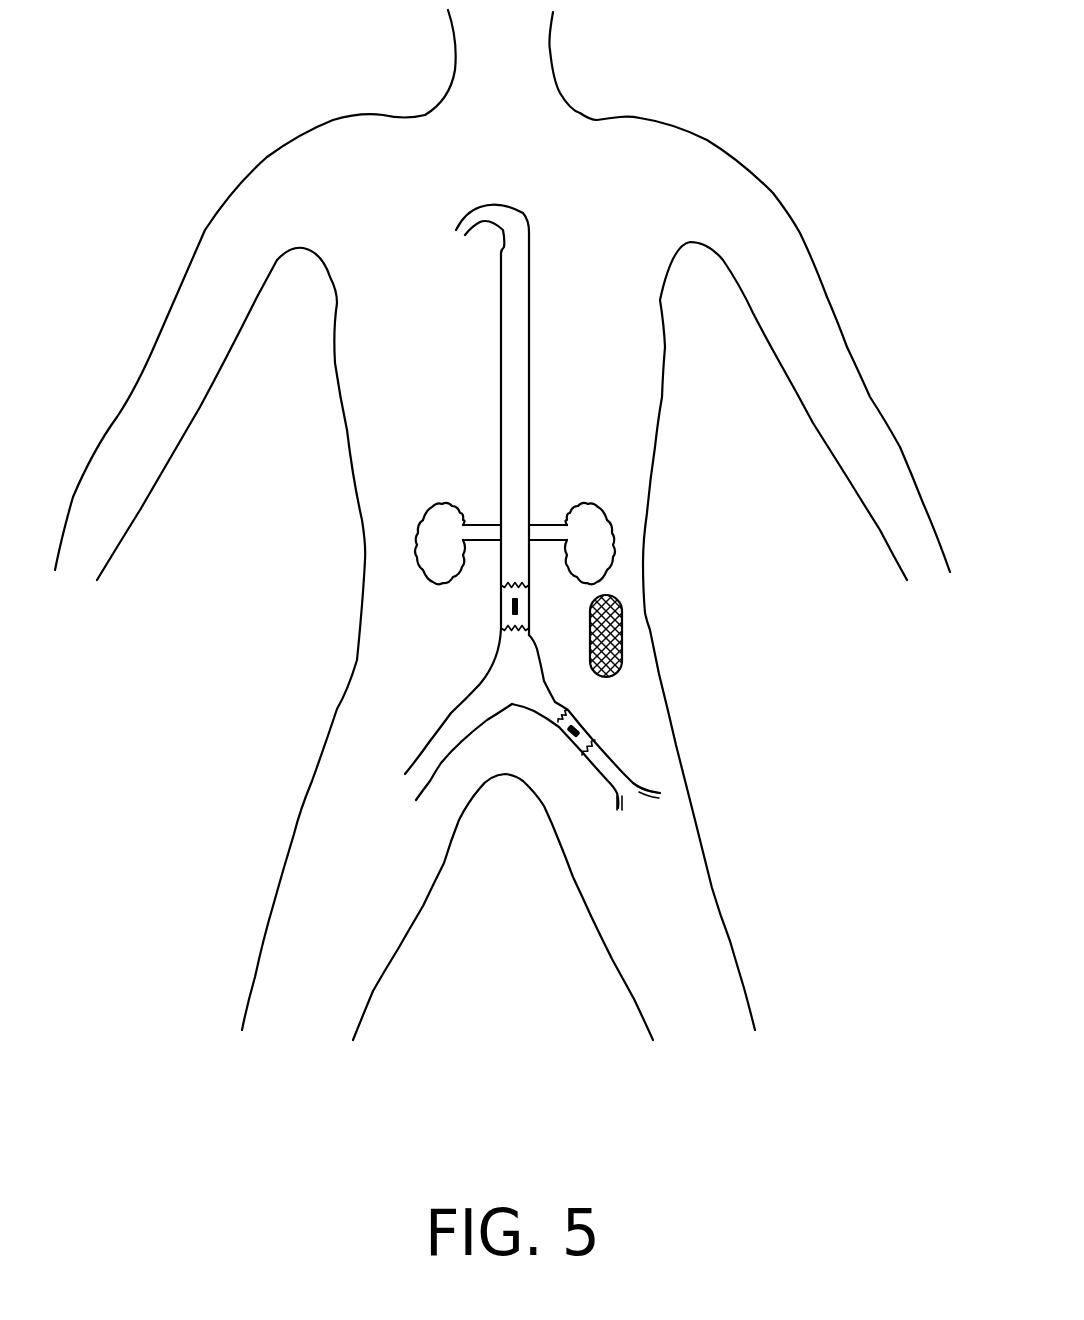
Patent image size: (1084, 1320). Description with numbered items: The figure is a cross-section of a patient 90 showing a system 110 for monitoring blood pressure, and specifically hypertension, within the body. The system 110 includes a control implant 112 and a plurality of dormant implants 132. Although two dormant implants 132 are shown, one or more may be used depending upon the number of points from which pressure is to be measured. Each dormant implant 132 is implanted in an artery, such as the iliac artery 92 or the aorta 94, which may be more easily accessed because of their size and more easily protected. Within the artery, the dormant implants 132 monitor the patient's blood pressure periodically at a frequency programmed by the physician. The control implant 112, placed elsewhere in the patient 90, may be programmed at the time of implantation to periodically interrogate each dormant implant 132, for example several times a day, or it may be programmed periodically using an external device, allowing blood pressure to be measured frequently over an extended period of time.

The patient 90 is at (767, 164).
The iliac artery 92 is at (597, 774).
The aorta 94 is at (500, 566).
The system 110 is at (628, 640).
The control implant 112 is at (623, 641).
The dormant implants 132 is at (565, 738).